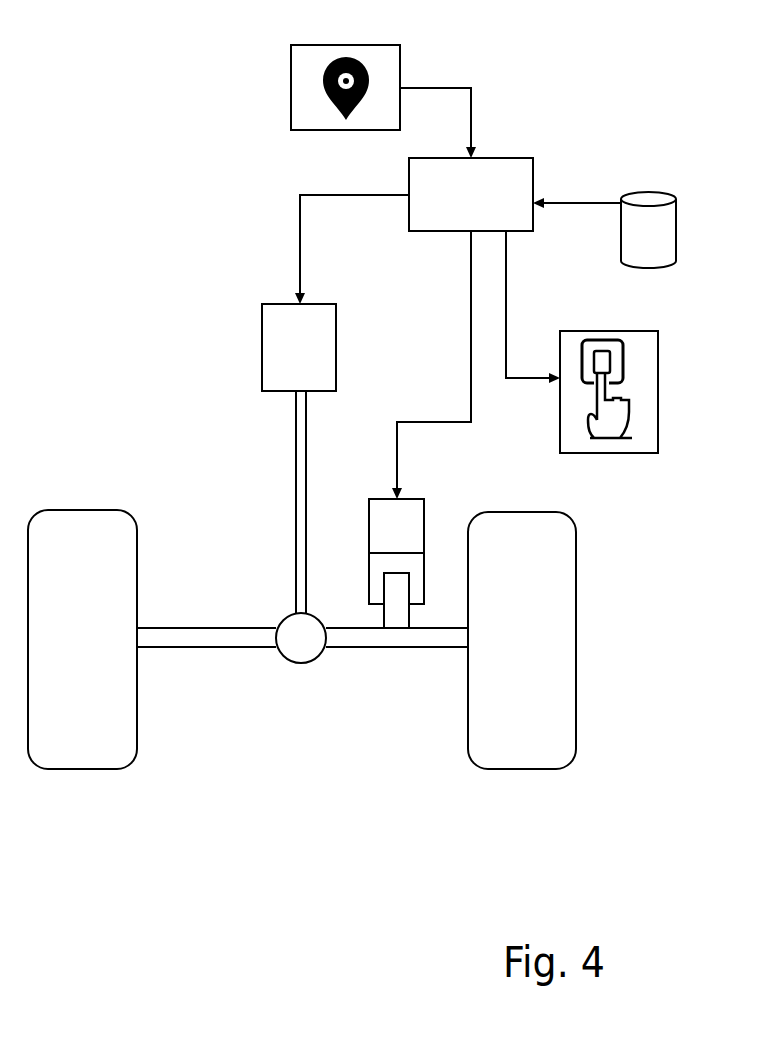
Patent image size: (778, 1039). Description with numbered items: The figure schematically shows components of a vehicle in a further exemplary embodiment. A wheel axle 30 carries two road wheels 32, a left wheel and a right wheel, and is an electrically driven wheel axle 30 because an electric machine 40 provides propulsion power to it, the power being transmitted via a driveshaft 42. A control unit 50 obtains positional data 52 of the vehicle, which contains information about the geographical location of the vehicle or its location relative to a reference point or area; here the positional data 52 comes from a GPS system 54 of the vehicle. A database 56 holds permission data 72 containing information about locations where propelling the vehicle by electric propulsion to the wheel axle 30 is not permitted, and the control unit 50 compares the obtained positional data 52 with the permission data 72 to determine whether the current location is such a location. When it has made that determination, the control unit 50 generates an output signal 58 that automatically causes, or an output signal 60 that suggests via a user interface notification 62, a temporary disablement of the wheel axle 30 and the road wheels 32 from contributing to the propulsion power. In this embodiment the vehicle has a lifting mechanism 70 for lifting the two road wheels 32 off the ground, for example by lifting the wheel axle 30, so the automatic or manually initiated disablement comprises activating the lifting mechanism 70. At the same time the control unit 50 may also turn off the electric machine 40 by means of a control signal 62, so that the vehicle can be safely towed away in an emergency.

The wheel axle 30 is at (202, 648).
The road wheels 32 is at (90, 771).
The electric machine 40 is at (262, 340).
The driveshaft 42 is at (296, 460).
The control unit 50 is at (533, 172).
The positional data 52 is at (437, 86).
The GPS system 54 is at (291, 68).
The database 56 is at (652, 191).
The output signal 58 is at (422, 421).
The output signal 60 is at (507, 310).
The user interface notification 62 is at (299, 230).
The lifting mechanism 70 is at (424, 517).
The permission data 72 is at (573, 206).